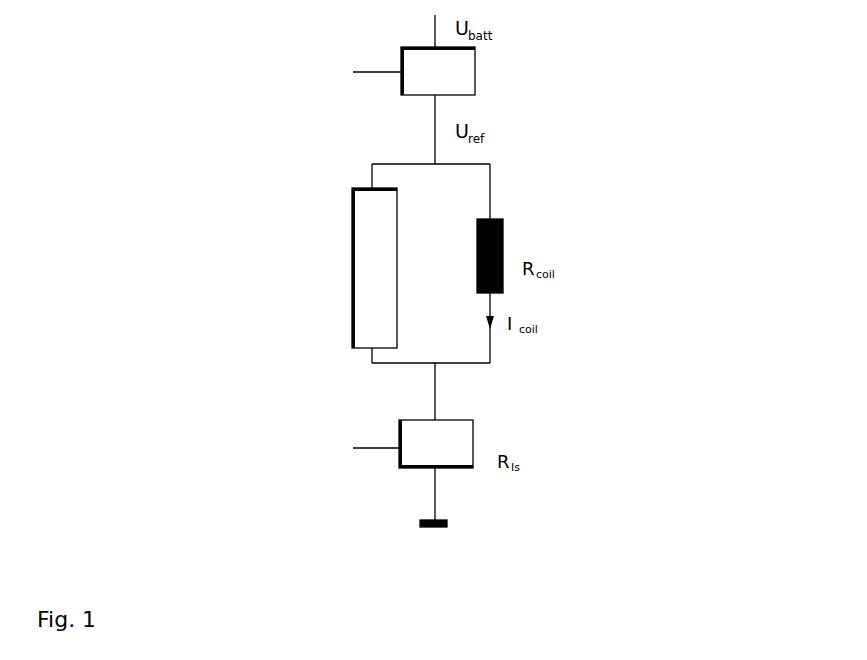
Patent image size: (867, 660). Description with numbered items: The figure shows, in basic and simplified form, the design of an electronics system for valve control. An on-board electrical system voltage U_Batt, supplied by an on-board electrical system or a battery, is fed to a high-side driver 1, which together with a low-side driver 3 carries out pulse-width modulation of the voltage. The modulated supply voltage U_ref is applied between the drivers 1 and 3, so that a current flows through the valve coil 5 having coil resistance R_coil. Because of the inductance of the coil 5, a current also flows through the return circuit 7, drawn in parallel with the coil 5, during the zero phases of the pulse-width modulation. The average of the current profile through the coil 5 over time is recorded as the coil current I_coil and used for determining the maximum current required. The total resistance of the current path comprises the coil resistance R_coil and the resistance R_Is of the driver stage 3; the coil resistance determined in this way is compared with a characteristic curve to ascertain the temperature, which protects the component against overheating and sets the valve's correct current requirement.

The high-side driver 1 is at (414, 71).
The low-side driver 3 is at (413, 444).
The valve coil 5 is at (503, 233).
The return circuit 7 is at (374, 268).